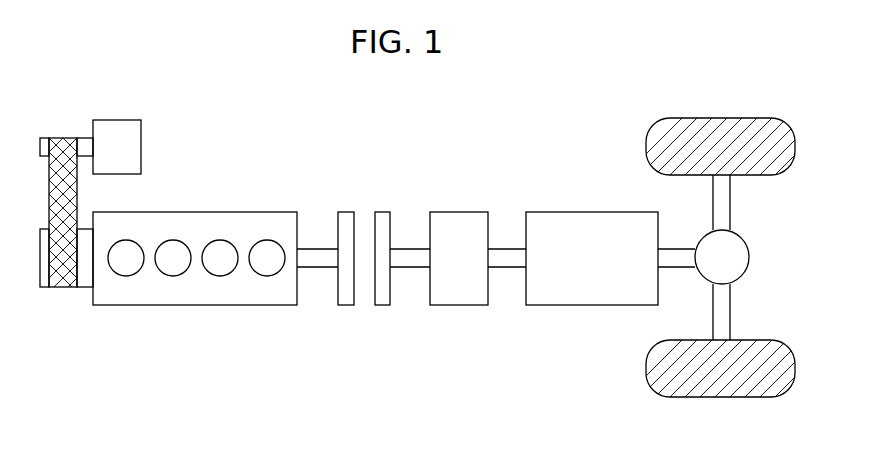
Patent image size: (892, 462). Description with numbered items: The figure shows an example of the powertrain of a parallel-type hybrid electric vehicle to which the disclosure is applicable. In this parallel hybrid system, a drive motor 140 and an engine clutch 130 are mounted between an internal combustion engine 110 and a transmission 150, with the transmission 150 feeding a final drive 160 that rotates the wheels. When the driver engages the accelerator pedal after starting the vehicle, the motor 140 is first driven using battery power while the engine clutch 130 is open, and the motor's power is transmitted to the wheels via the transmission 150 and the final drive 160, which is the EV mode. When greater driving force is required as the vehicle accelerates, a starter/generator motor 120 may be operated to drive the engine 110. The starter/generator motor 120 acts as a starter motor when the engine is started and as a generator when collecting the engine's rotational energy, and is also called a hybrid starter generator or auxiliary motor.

The internal combustion engine 110 is at (265, 210).
The starter/generator motor 120 is at (108, 115).
The engine clutch 130 is at (383, 210).
The drive motor 140 is at (456, 210).
The transmission 150 is at (623, 210).
The final drive 160 is at (748, 238).